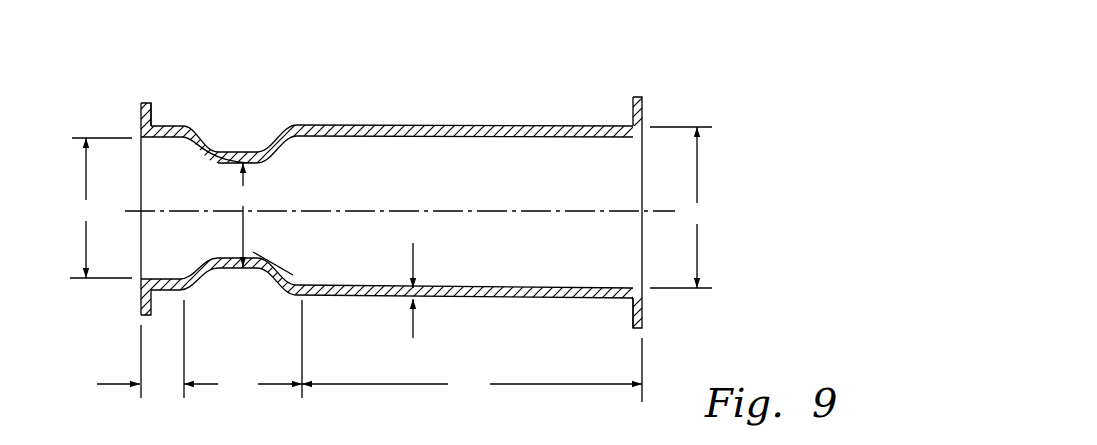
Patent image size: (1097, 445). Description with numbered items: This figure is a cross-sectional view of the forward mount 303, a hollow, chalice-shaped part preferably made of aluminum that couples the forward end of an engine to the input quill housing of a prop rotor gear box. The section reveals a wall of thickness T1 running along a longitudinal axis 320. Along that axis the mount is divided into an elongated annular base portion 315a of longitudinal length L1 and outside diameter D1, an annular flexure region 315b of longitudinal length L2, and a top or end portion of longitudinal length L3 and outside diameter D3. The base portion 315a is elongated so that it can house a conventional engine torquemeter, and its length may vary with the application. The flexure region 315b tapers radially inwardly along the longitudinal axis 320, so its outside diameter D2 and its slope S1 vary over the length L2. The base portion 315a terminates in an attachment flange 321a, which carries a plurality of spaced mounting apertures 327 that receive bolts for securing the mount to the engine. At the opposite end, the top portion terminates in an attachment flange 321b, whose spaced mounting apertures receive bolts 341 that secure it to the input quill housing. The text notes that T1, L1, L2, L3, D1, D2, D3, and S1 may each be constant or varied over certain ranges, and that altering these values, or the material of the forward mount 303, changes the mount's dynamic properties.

The forward mount 303 is at (404, 48).
The base portion 315a is at (435, 125).
The flexure region 315b is at (301, 115).
The longitudinal axis 320 is at (496, 211).
The attachment flange 321a is at (637, 97).
The attachment flange 321b is at (146, 102).
The mounting apertures 327 is at (641, 311).
The bolts 341 is at (151, 115).
The slope S1 is at (286, 271).
The outside diameter D1 is at (681, 207).
The outside diameter D2 is at (245, 215).
The outside diameter D3 is at (101, 208).
The wall thickness T1 is at (413, 243).
The longitudinal length L1 is at (472, 370).
The longitudinal length L2 is at (243, 349).
The longitudinal length L3 is at (145, 349).